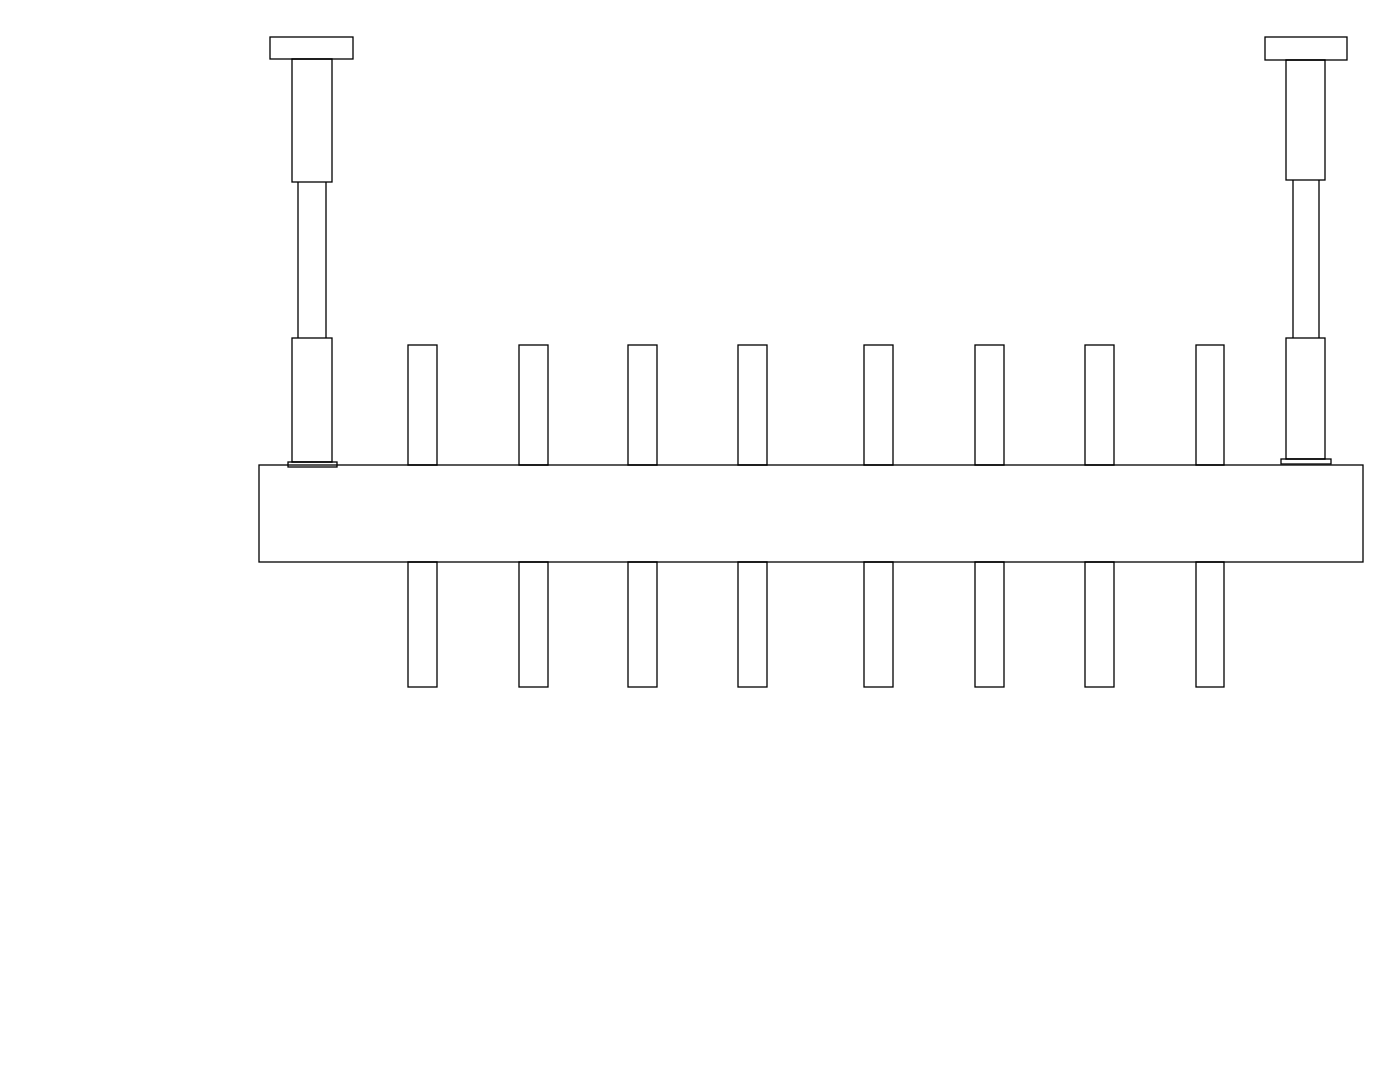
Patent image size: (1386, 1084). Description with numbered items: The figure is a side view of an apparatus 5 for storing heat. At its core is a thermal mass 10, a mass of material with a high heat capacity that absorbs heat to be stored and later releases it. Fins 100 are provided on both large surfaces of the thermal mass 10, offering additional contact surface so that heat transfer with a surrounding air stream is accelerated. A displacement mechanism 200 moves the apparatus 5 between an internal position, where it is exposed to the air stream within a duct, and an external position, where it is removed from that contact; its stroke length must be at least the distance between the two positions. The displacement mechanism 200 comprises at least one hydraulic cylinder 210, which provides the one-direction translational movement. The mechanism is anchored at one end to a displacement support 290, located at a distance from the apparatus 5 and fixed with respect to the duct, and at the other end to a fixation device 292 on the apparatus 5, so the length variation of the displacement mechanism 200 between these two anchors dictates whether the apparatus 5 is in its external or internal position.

The apparatus 5 is at (735, 226).
The thermal mass 10 is at (354, 547).
The fins 100 is at (1212, 352).
The displacement mechanism 200 is at (342, 252).
The hydraulic cylinder 210 is at (300, 235).
The displacement support 290 is at (288, 52).
The fixation device 292 is at (293, 462).